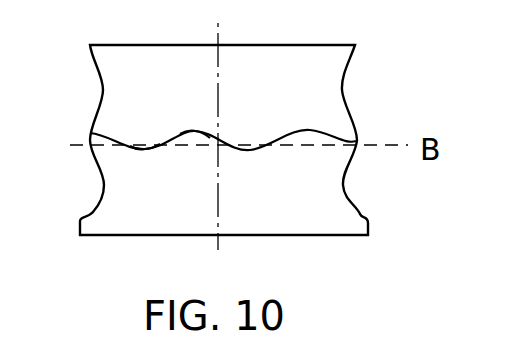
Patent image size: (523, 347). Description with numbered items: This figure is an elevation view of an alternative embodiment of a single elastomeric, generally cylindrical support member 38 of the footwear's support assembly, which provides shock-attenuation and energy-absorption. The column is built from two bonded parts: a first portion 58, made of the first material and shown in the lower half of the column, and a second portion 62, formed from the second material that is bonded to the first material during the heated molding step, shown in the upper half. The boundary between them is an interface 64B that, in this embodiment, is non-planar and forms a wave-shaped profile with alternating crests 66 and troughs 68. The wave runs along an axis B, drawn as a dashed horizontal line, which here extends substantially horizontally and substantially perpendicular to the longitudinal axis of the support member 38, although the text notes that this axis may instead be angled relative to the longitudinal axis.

The support member 38 is at (348, 183).
The second portion 62 is at (313, 101).
The first portion 58 is at (314, 206).
The interface 64B is at (187, 136).
The crest 66 is at (195, 130).
The trough 68 is at (142, 149).